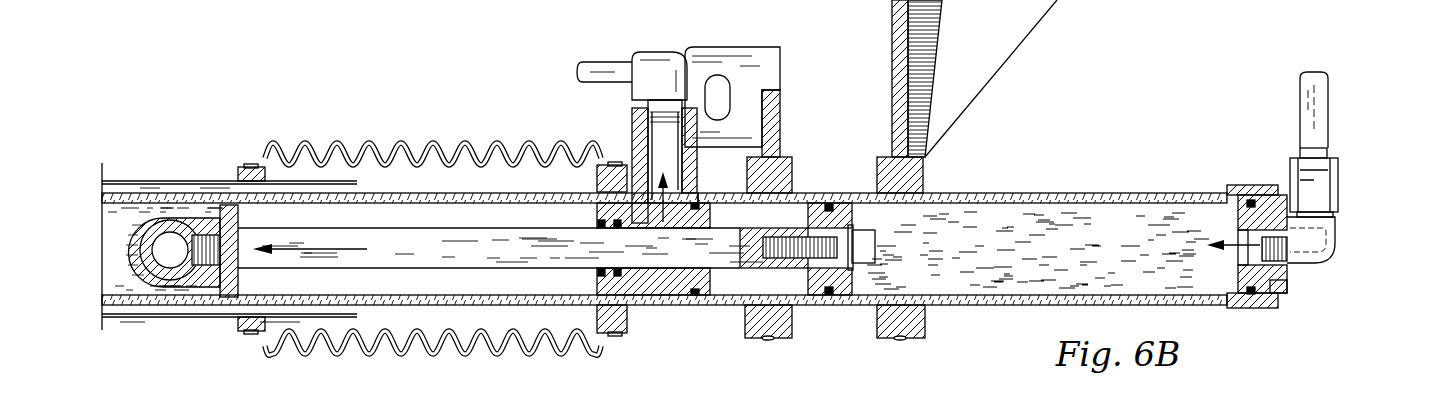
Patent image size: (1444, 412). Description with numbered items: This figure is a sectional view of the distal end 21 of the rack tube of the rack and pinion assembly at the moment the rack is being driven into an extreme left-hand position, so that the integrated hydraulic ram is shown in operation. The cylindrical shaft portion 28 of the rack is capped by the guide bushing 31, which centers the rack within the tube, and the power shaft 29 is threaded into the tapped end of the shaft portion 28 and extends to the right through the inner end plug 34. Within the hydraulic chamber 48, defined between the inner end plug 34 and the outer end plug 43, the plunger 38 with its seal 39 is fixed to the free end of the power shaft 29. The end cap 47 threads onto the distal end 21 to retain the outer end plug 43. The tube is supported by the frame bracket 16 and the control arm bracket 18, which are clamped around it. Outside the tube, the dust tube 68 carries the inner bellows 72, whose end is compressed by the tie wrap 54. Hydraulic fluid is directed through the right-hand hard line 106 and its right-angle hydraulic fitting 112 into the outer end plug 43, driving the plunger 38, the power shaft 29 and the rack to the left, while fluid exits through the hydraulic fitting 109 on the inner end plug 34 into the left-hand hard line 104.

The right frame bracket 16 is at (1013, 52).
The right control arm bracket 18 is at (780, 105).
The distal end 21 is at (1110, 193).
The cylindrical shaft portion 28 is at (123, 282).
The power shaft 29 is at (477, 237).
The guide bushing 31 is at (240, 218).
The inner end plug 34 is at (650, 285).
The plunger 38 is at (816, 195).
The seal 39 is at (833, 298).
The outer end plug 43 is at (1238, 278).
The end cap 47 is at (1288, 290).
The hydraulic chamber 48 is at (1073, 277).
The tie wrap 54 is at (252, 165).
The dust tube 68 is at (195, 183).
The right-hand inner bellows 72 is at (432, 143).
The hard line 104 is at (603, 62).
The hard line 106 is at (1298, 125).
The hydraulic fitting 109 is at (620, 126).
The right-angle hydraulic fitting 112 is at (1342, 258).